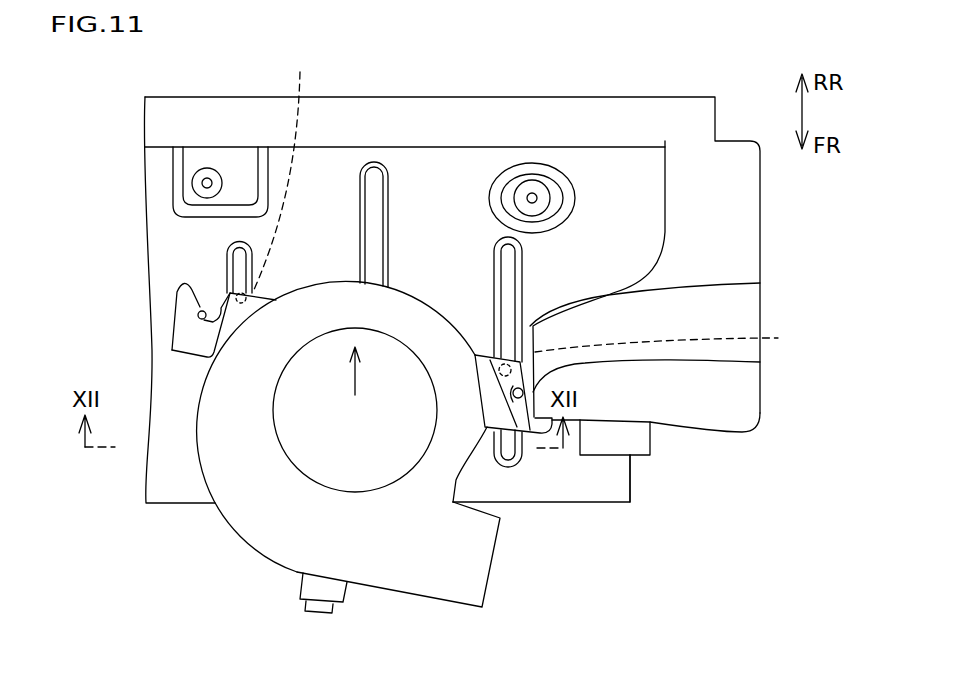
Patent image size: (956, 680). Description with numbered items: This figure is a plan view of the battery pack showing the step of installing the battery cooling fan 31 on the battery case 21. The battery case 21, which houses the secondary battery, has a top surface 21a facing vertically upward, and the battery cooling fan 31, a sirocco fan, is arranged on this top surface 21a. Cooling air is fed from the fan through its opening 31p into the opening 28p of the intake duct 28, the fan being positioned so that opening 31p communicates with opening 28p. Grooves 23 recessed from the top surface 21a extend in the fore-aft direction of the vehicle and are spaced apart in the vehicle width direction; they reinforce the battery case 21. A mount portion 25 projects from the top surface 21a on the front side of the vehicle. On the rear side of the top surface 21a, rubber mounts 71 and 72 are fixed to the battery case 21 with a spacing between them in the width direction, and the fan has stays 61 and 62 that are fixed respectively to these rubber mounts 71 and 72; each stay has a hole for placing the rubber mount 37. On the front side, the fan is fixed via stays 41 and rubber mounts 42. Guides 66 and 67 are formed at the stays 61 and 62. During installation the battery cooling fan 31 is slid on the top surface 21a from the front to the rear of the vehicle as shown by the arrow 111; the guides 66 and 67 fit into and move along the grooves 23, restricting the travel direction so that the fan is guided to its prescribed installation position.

The battery case 21 is at (632, 480).
The top surface 21a is at (572, 483).
The grooves 23 is at (240, 264).
The mount portion 25 is at (173, 178).
The intake duct 28 is at (730, 200).
The opening 28p is at (735, 288).
The battery cooling fan 31 is at (412, 553).
The opening 31p is at (493, 588).
The hole for placing the rubber mount 37 is at (198, 318).
The stays 41 is at (347, 594).
The rubber mounts 42 is at (318, 614).
The stay 61 is at (183, 341).
The stay 62 is at (760, 362).
The guide 66 is at (284, 171).
The guide 67 is at (674, 339).
The rubber mount 71 is at (207, 168).
The rubber mount 72 is at (530, 180).
The arrow 111 is at (280, 380).